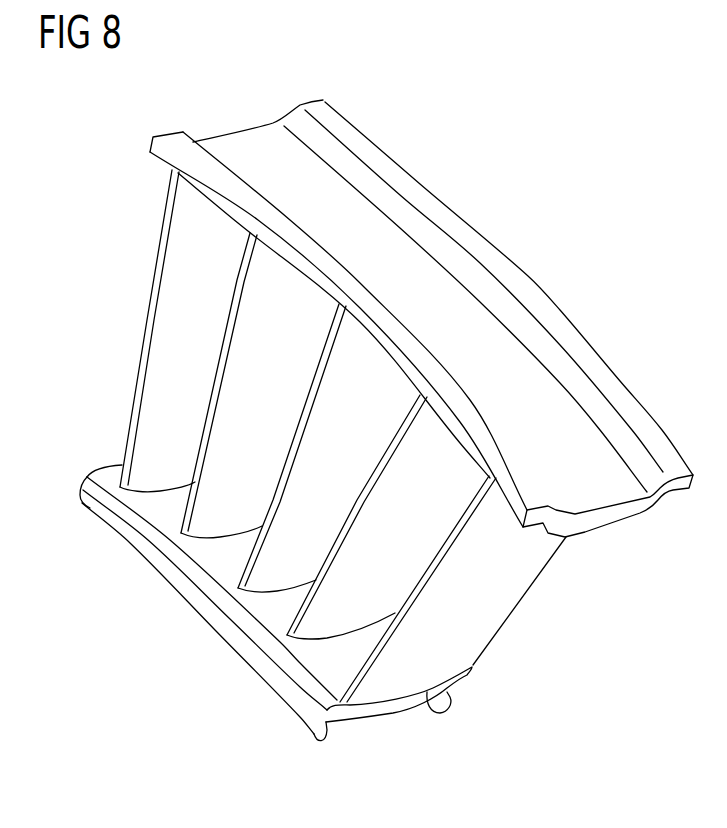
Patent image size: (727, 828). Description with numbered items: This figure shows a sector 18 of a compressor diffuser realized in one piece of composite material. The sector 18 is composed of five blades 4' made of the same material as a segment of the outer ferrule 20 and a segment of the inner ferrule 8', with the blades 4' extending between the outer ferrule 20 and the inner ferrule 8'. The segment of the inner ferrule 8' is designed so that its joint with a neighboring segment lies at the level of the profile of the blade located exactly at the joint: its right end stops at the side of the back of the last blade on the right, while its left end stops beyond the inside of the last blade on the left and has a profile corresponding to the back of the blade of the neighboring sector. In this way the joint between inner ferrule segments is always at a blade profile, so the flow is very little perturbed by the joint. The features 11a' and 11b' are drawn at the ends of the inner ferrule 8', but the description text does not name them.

The sector 18 is at (130, 175).
The outer ferrule 20 is at (380, 163).
The blades 4' is at (149, 331).
The front hook of inner shroud 11a' is at (87, 448).
The inner ferrule 8' is at (249, 600).
The rear hook of inner shroud 11b' is at (399, 724).